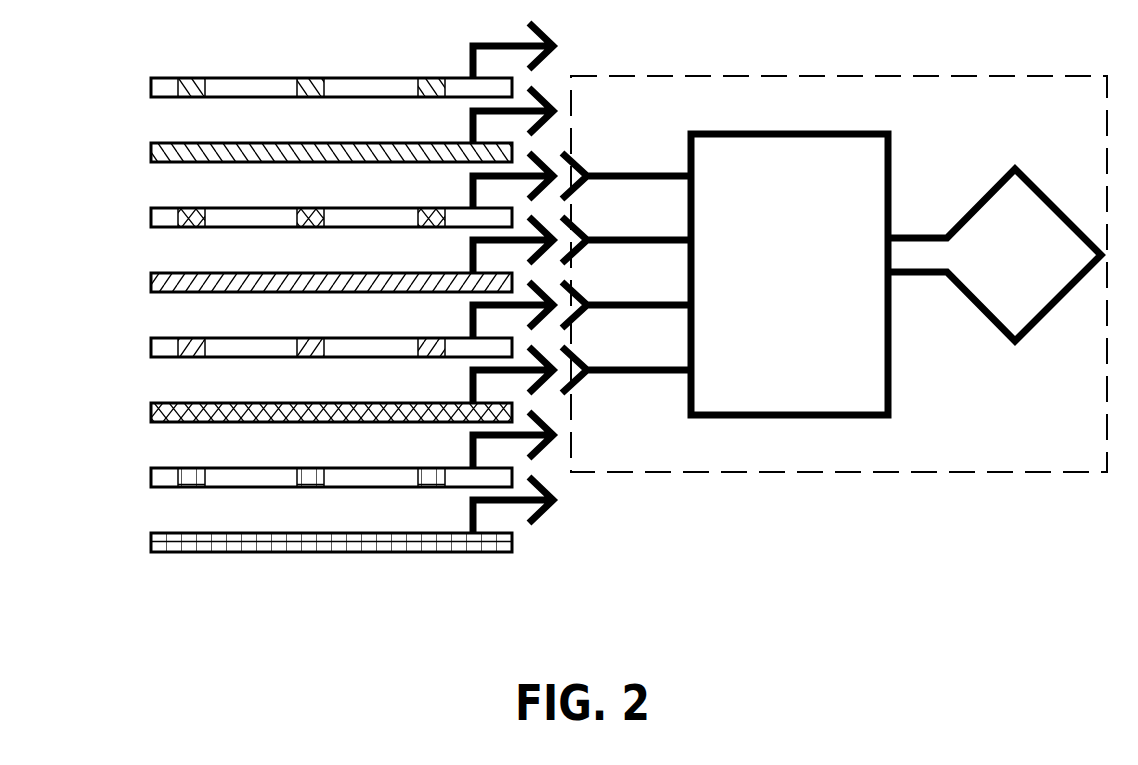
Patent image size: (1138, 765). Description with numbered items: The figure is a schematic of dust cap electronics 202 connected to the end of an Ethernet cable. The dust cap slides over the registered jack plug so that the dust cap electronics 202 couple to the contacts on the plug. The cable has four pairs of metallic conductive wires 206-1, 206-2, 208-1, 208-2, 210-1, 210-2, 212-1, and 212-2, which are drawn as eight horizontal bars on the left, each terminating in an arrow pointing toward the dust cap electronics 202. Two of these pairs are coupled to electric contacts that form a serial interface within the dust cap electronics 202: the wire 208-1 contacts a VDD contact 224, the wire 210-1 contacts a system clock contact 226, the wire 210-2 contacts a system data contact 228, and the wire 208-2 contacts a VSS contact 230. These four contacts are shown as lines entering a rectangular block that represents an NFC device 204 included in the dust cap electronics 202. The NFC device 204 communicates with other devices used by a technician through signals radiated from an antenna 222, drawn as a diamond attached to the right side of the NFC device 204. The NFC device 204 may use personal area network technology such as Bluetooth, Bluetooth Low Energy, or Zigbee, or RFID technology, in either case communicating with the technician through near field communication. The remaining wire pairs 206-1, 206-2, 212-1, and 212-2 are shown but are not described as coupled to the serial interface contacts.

The dust cap electronics 202 is at (794, 76).
The NFC device 204 is at (892, 186).
The antenna 222 is at (1045, 191).
The VDD contact 224 is at (602, 173).
The system clock contact 226 is at (602, 238).
The system data contact 228 is at (602, 303).
The VSS contact 230 is at (602, 368).
The metallic conductive wire 206-1 is at (151, 88).
The metallic conductive wire 206-2 is at (151, 153).
The metallic conductive wire 208-1 is at (151, 218).
The metallic conductive wire 208-2 is at (151, 413).
The metallic conductive wire 210-1 is at (151, 283).
The metallic conductive wire 210-2 is at (151, 348).
The metallic conductive wire 212-1 is at (151, 478).
The metallic conductive wire 212-2 is at (151, 543).